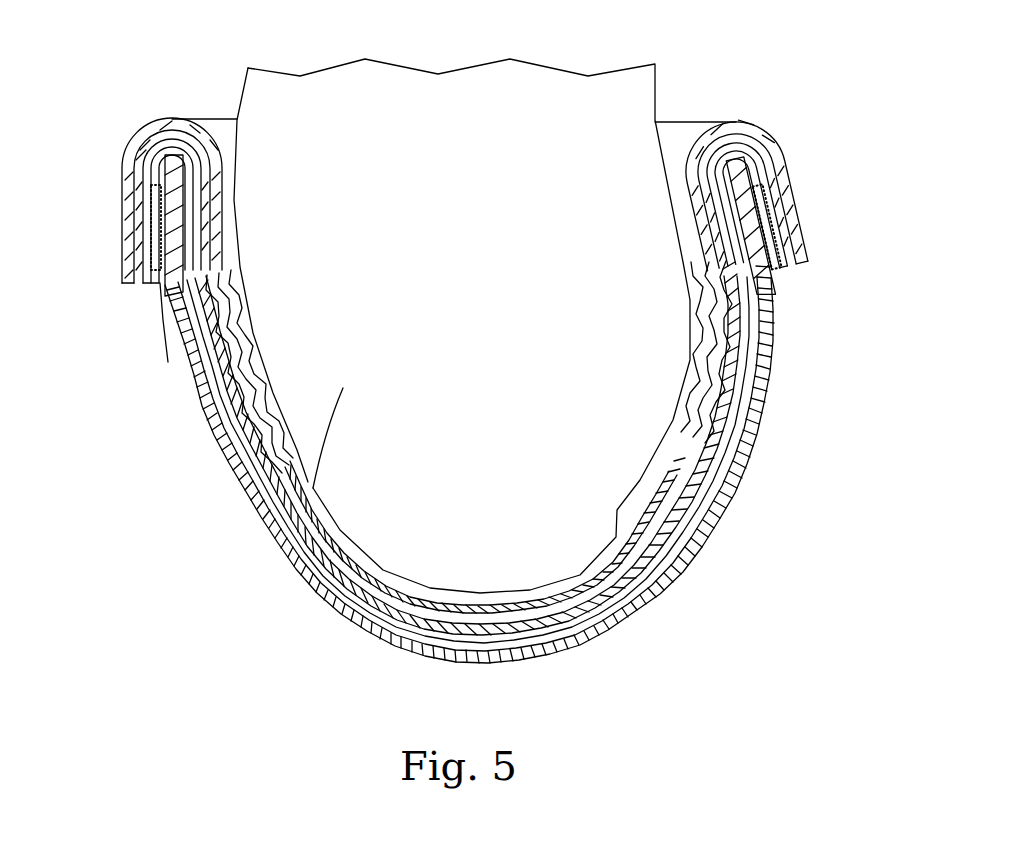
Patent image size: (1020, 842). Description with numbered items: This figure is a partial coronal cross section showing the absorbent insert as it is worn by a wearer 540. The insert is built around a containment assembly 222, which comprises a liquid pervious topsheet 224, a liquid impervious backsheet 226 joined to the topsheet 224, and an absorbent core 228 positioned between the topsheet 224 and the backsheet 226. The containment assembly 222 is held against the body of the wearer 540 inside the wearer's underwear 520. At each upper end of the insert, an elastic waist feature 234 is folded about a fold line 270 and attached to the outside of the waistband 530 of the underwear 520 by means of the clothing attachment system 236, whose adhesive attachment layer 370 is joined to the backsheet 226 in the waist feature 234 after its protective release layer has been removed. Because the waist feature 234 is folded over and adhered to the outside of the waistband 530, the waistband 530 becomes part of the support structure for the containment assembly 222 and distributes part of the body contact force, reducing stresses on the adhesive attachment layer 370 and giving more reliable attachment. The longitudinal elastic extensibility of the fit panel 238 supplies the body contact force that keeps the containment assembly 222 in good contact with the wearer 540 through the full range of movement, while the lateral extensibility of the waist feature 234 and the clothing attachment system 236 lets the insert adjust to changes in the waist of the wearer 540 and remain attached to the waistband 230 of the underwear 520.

The wearer 540 is at (245, 82).
The waist feature 234 is at (145, 130).
The fold line 270 is at (737, 122).
The liquid pervious topsheet 224 is at (790, 211).
The waistband 530 is at (768, 282).
The liquid impervious backsheet 226 is at (735, 412).
The absorbent core 228 is at (693, 484).
The underwear 520 is at (660, 581).
The fit panel 238 is at (722, 358).
The waistband 230 is at (215, 315).
The containment assembly 222 is at (280, 524).
The clothing attachment system 236 is at (111, 270).
The adhesive attachment layer 370 is at (165, 350).